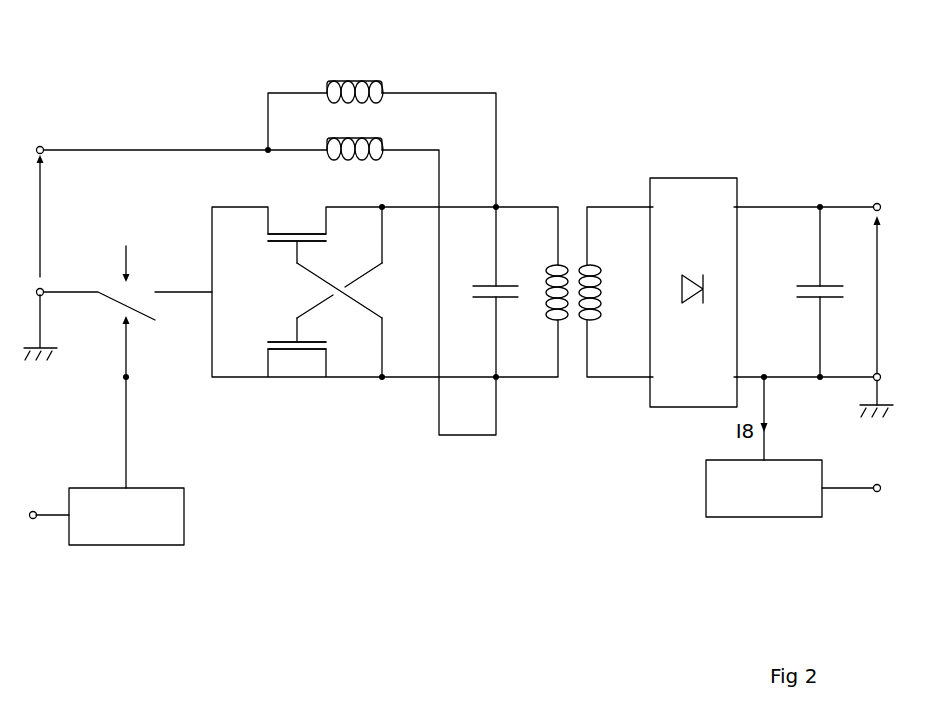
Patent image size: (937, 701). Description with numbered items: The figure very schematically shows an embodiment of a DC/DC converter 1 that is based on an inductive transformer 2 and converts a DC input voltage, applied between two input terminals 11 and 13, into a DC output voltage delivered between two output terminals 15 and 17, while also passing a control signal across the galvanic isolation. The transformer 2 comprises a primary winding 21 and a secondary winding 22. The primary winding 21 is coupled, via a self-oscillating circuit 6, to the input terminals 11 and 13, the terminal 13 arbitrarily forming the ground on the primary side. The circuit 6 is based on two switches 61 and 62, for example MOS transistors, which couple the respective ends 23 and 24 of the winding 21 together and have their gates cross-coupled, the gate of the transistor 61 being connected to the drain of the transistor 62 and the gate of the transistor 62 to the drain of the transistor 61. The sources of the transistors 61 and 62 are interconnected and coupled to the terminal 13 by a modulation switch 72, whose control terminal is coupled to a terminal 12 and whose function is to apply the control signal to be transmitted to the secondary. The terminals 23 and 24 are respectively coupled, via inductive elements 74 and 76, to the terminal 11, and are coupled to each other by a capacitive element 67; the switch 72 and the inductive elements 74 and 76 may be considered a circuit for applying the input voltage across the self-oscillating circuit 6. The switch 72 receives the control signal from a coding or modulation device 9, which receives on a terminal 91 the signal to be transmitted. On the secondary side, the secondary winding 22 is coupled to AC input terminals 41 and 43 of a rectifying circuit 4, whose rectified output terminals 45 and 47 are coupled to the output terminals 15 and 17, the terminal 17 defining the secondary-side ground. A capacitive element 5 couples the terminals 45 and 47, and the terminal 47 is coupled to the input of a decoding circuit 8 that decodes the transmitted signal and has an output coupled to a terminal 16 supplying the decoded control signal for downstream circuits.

The DC/DC converter 1 is at (484, 543).
The transformer 2 is at (570, 213).
The rectifying circuit 4 is at (680, 178).
The capacitive element 5 is at (810, 285).
The self-oscillating circuit 6 is at (359, 410).
The decoding circuit 8 is at (735, 517).
The coding or modulation device 9 is at (160, 545).
The input terminal 11 is at (43, 147).
The terminal 12 is at (129, 379).
The input terminal 13 is at (43, 296).
The output terminal 15 is at (874, 204).
The terminal 16 is at (877, 492).
The output terminal 17 is at (880, 375).
The primary winding 21 is at (546, 266).
The secondary winding 22 is at (607, 274).
The end of primary winding 23 is at (500, 206).
The end of primary winding 24 is at (498, 380).
The AC input terminal 41 is at (651, 207).
The AC input terminal 43 is at (650, 377).
The rectified output terminal 45 is at (737, 207).
The rectified output terminal 47 is at (737, 377).
The switch 61 is at (294, 234).
The switch 62 is at (297, 370).
The capacitive element 67 is at (486, 284).
The modulation switch 72 is at (131, 305).
The inductive element 74 is at (334, 81).
The inductive element 76 is at (357, 160).
The terminal 91 is at (35, 520).